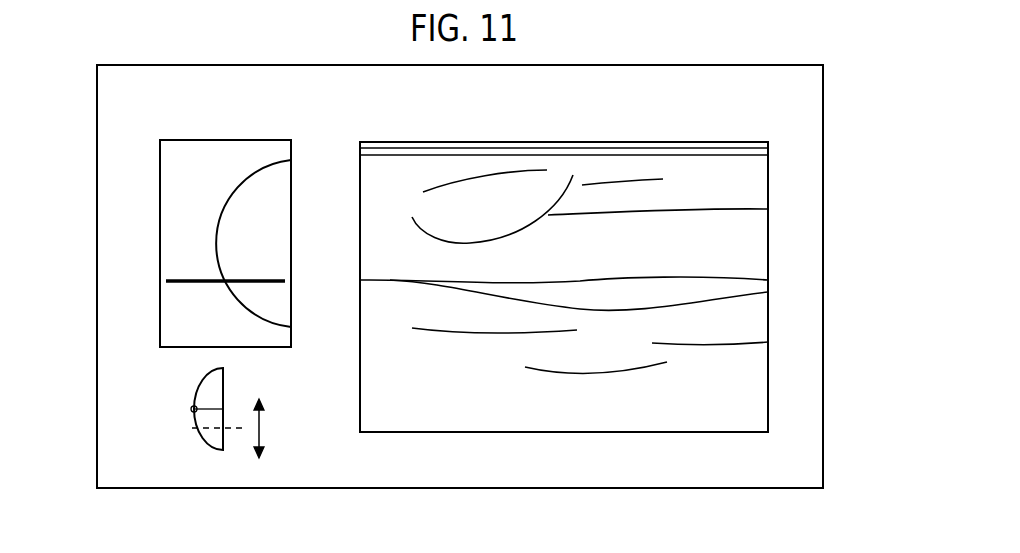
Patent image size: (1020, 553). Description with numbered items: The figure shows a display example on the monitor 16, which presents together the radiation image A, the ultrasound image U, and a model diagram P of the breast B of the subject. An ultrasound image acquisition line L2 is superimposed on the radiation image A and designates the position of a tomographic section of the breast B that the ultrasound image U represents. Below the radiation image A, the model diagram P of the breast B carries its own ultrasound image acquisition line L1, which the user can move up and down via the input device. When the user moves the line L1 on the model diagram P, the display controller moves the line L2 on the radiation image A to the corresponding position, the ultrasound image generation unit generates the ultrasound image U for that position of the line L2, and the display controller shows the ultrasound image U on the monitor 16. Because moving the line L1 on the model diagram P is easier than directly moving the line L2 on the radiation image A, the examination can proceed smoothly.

The monitor 16 is at (791, 103).
The radiation image A is at (183, 185).
The breast B is at (243, 251).
The ultrasound image acquisition line L2 is at (187, 281).
The model diagram P is at (210, 393).
The ultrasound image acquisition line L1 is at (237, 432).
The ultrasound image U is at (738, 244).